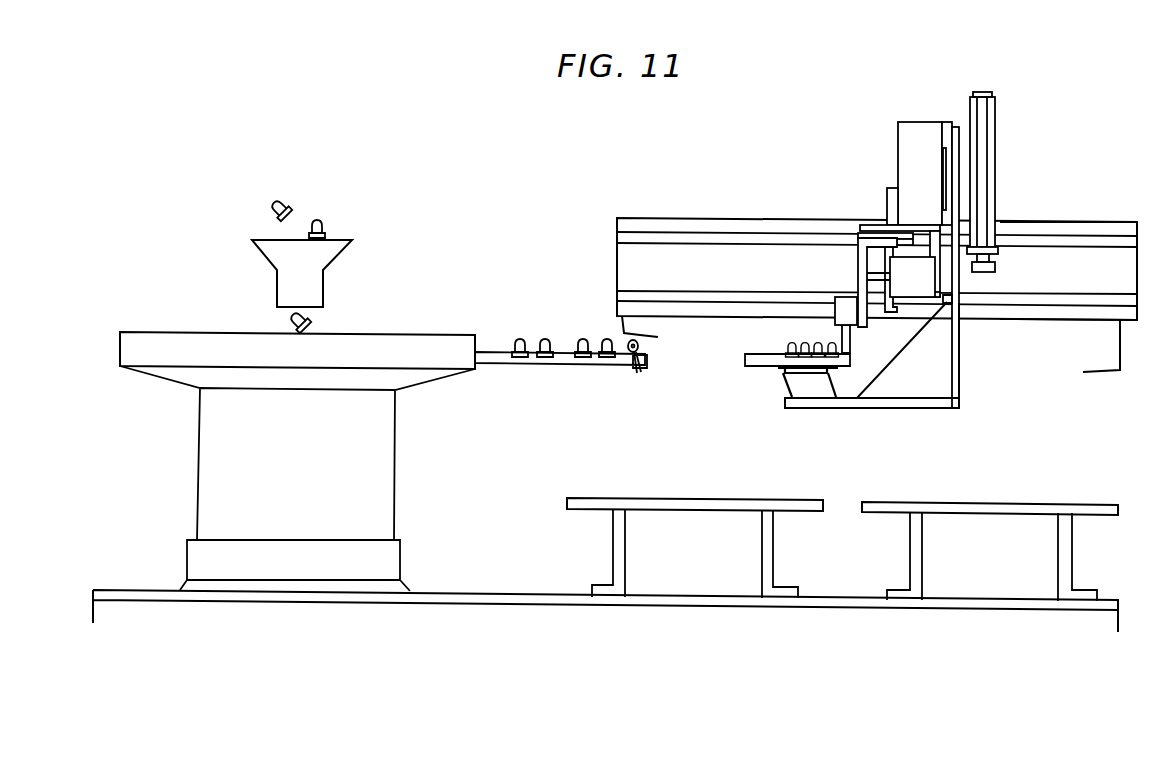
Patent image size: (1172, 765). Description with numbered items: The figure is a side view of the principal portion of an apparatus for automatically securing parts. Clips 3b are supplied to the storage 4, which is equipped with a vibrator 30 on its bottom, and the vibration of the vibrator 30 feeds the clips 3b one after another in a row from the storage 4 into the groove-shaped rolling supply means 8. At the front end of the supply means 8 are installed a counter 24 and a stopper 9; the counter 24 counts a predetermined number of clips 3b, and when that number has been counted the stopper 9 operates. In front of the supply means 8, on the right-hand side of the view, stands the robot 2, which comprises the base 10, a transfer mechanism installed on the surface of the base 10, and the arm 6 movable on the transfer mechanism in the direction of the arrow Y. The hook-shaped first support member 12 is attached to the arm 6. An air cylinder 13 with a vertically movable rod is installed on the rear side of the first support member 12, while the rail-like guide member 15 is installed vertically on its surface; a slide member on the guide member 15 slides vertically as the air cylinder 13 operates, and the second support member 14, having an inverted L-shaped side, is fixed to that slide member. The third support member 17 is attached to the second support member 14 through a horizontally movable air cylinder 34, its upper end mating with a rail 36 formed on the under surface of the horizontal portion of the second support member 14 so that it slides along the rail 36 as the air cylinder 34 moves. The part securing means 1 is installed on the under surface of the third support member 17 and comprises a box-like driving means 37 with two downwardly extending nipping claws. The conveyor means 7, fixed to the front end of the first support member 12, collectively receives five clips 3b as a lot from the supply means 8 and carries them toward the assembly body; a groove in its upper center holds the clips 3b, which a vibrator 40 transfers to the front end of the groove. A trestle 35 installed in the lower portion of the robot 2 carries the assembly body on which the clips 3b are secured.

The part securing means 1 is at (1140, 264).
The robot 2 is at (721, 212).
The clips 3b is at (317, 218).
The storage 4 is at (421, 333).
The arm 6 is at (918, 130).
The conveyor means 7 is at (760, 354).
The rolling supply means 8 is at (549, 365).
The stopper 9 is at (628, 340).
The base 10 is at (1113, 347).
The first support member 12 is at (957, 375).
The air cylinder 13 is at (985, 145).
The second support member 14 is at (873, 224).
The guide member 15 is at (958, 340).
The third support member 17 is at (858, 268).
The counter 24 is at (640, 348).
The vibrator 30 is at (388, 562).
The air cylinder 34 is at (915, 290).
The trestle 35 is at (790, 498).
The rail 36 is at (860, 228).
The driving means 37 is at (835, 305).
The vibrator 40 is at (778, 375).